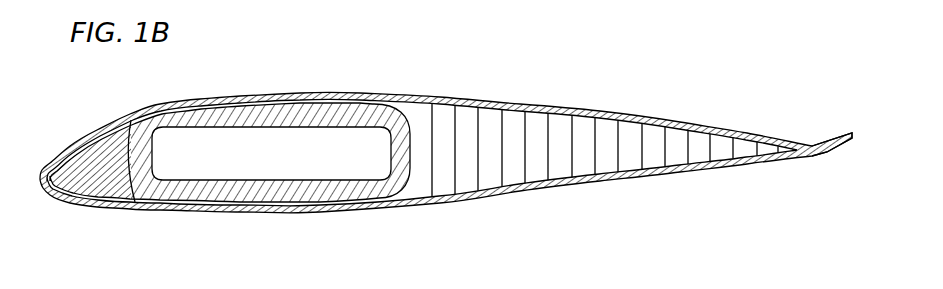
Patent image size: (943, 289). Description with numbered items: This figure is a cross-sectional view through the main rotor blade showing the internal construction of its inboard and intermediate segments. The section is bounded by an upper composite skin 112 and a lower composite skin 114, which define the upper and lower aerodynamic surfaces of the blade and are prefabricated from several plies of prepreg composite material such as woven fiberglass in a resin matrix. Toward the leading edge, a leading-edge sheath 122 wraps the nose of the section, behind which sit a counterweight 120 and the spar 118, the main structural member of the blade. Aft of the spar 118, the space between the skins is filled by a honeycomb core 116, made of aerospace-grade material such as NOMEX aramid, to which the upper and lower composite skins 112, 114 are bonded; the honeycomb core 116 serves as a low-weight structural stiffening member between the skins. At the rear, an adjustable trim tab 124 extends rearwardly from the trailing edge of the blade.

The upper composite skin 112 is at (472, 93).
The lower composite skin 114 is at (440, 205).
The honeycomb core 116 is at (647, 142).
The spar 118 is at (397, 110).
The counterweight 120 is at (90, 181).
The leading-edge sheath 122 is at (45, 138).
The adjustable trim tab 124 is at (852, 133).